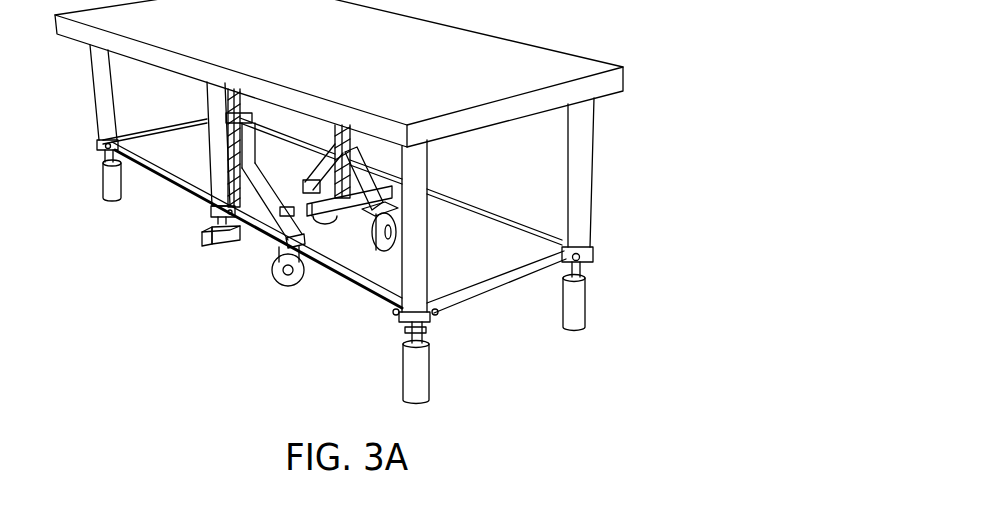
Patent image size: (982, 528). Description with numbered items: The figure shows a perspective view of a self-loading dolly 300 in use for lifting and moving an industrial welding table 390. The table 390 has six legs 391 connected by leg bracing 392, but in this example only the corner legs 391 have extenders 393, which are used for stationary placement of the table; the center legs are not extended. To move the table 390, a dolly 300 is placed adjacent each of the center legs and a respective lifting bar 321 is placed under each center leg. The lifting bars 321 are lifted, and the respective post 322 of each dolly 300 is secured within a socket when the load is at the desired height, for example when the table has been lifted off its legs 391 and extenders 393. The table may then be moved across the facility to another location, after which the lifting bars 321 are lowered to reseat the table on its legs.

The dolly 300 is at (270, 158).
The lifting bar 321 is at (222, 240).
The post 322 is at (240, 142).
The industrial welding table 390 is at (513, 58).
The leg 391 is at (585, 171).
The leg bracing 392 is at (470, 297).
The extender 393 is at (586, 303).